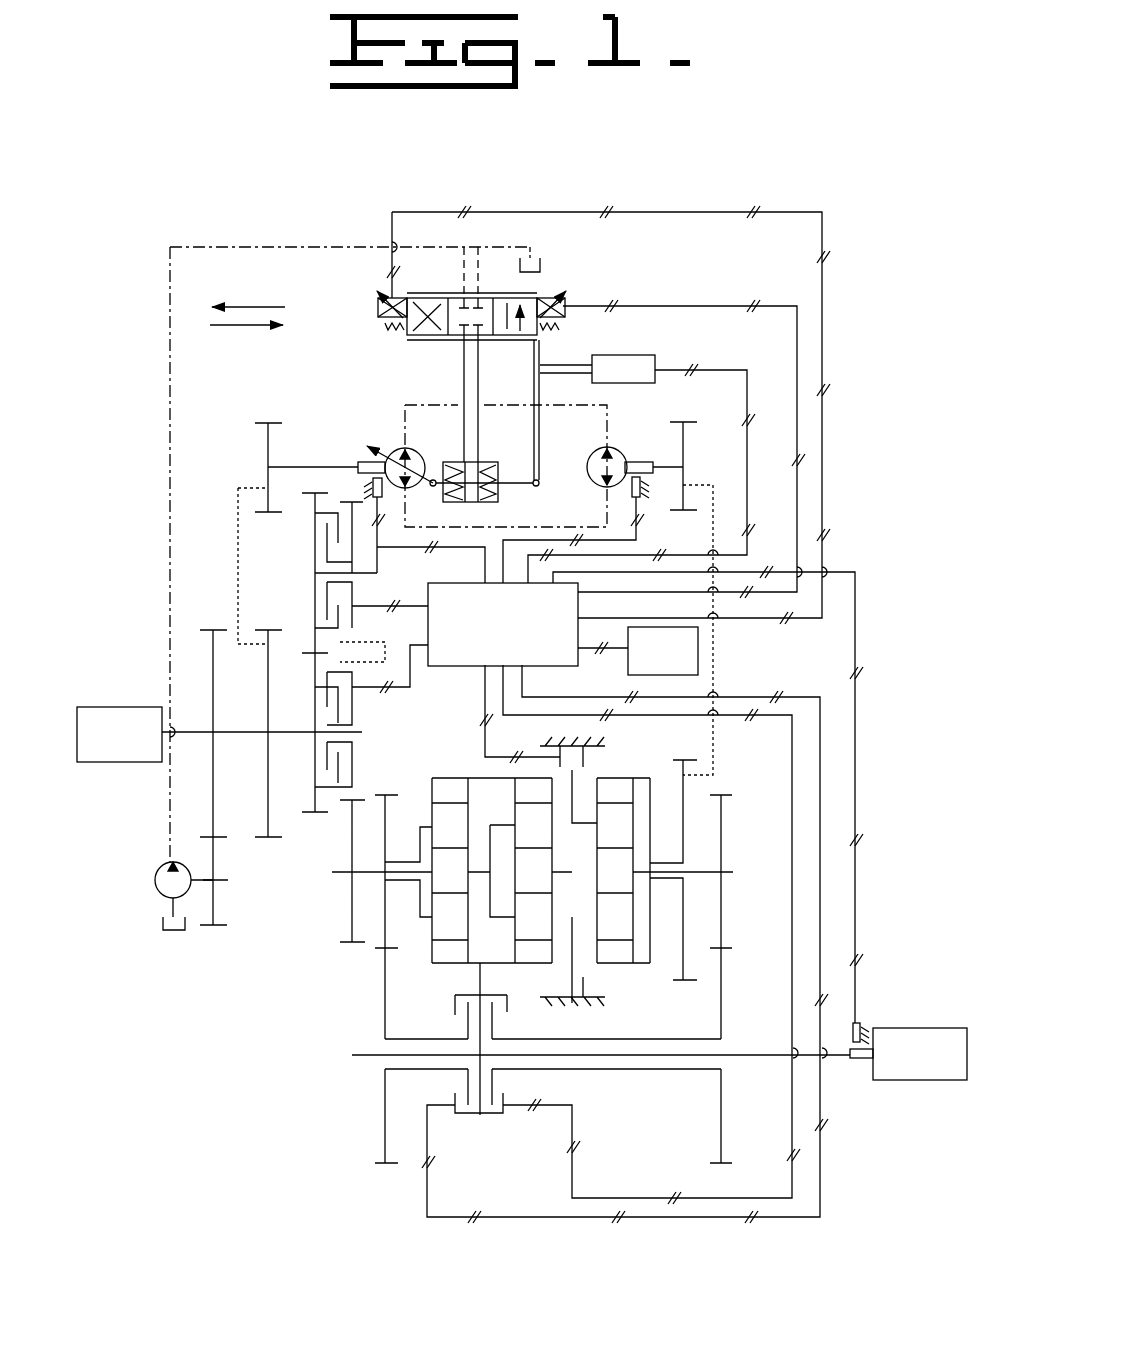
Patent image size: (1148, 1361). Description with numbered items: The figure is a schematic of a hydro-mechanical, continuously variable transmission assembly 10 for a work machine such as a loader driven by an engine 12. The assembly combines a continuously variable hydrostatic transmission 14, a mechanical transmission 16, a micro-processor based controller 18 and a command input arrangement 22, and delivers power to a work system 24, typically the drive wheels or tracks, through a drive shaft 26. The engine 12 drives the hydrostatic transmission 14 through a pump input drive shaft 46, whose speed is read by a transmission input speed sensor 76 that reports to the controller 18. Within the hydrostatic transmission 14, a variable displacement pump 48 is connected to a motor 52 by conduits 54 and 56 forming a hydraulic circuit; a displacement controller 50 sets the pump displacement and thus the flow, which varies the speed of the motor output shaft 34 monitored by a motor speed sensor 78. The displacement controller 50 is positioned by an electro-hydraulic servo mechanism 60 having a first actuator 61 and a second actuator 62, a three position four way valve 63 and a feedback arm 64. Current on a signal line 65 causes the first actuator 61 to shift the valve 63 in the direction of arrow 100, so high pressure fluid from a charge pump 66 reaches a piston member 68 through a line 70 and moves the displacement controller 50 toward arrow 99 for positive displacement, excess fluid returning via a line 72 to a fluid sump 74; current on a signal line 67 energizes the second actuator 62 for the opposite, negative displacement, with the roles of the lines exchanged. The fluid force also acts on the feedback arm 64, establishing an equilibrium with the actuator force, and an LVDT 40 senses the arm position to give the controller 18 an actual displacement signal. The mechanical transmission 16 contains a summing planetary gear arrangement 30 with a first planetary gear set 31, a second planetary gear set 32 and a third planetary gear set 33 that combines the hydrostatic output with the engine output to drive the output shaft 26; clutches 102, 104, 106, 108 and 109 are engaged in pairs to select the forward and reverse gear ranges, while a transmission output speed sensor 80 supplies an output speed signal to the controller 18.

The transmission assembly 10 is at (200, 180).
The engine 12 is at (110, 707).
The hydrostatic transmission 14 is at (668, 420).
The mechanical transmission 16 is at (262, 1010).
The controller 18 is at (456, 666).
The command input arrangement 22 is at (628, 660).
The work system 24 is at (935, 1028).
The drive shaft 26 is at (360, 1057).
The summing planetary gear arrangement 30 is at (435, 768).
The first planetary gear set 31 is at (440, 963).
The second planetary gear set 32 is at (522, 963).
The third planetary gear set 33 is at (650, 965).
The motor output shaft 34 is at (627, 460).
The LVDT 40 is at (665, 355).
The pump input drive shaft 46 is at (360, 453).
The variable displacement pump 48 is at (420, 450).
The displacement controller 50 is at (433, 490).
The motor 52 is at (592, 450).
The conduit 54 is at (622, 418).
The conduit 56 is at (552, 527).
The electro-hydraulic servo mechanism 60 is at (355, 390).
The first actuator 61 is at (377, 300).
The second actuator 62 is at (578, 313).
The three position four way valve 63 is at (400, 340).
The feedback arm 64 is at (545, 352).
The signal line 65 is at (660, 213).
The charge pump 66 is at (158, 890).
The signal line 67 is at (690, 306).
The piston member 68 is at (480, 462).
The line 70 is at (480, 392).
The line 72 is at (462, 383).
The fluid sump 74 is at (542, 265).
The transmission input speed sensor 76 is at (370, 485).
The motor speed sensor 78 is at (642, 485).
The transmission output speed sensor 80 is at (858, 1023).
The arrow 99 is at (262, 305).
The arrow 100 is at (245, 327).
The clutch 102 is at (593, 760).
The clutch 104 is at (455, 1005).
The clutch 106 is at (507, 1005).
The clutch 108 is at (316, 520).
The clutch 109 is at (320, 772).